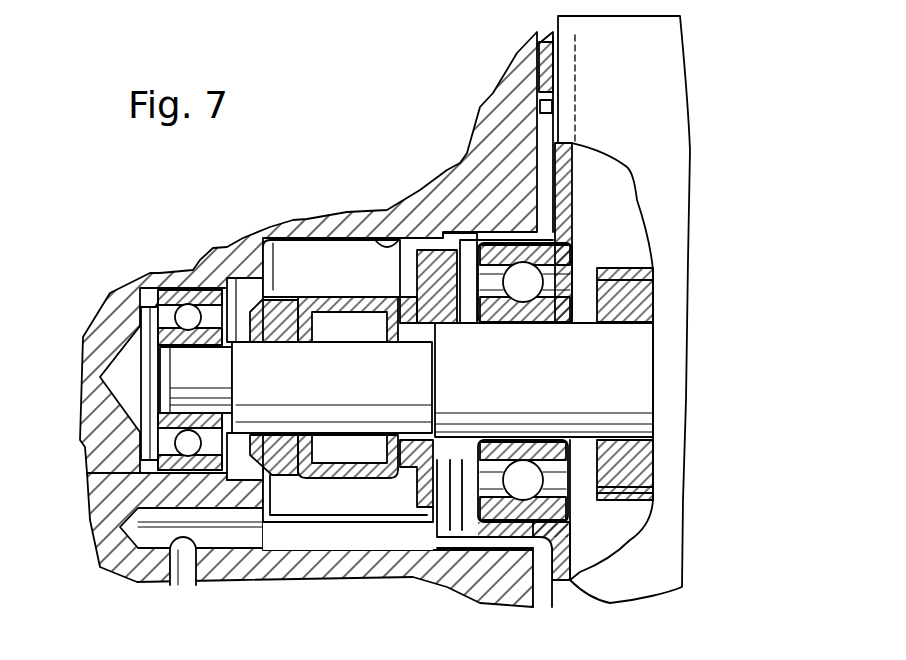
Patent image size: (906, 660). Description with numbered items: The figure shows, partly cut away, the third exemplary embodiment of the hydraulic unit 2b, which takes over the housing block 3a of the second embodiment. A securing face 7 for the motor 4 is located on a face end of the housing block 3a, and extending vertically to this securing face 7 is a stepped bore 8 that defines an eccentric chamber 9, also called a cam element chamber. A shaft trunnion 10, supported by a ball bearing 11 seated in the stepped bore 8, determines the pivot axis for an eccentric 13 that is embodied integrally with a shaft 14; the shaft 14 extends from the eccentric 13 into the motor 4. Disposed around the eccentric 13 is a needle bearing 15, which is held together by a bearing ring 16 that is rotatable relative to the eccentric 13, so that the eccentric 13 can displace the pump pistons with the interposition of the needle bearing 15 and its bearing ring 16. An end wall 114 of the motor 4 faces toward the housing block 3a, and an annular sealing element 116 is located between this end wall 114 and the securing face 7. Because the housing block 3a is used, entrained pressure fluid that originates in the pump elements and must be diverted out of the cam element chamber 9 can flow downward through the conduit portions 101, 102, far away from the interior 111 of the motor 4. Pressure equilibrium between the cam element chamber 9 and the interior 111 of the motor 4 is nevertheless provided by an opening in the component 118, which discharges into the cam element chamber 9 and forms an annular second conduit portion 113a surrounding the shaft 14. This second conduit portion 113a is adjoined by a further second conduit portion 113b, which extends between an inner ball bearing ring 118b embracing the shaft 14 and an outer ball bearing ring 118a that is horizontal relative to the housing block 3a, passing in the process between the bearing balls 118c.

The hydraulic unit 2b is at (625, 305).
The housing block 3a is at (110, 320).
The motor 4 is at (673, 110).
The securing face 7 is at (540, 106).
The stepped bore 8 is at (375, 240).
The eccentric chamber 9 is at (338, 262).
The shaft trunnion 10 is at (212, 381).
The ball bearing 11 is at (87, 475).
The eccentric 13 is at (368, 390).
The shaft 14 is at (548, 391).
The needle bearing 15 is at (353, 455).
The bearing ring 16 is at (320, 472).
The first conduit portion 101 is at (150, 540).
The first conduit portion 102 is at (187, 573).
The interior of the motor 111 is at (630, 242).
The second conduit portion 113a is at (437, 507).
The further second conduit portion 113b is at (553, 528).
The end wall of the motor 114 is at (578, 176).
The sealing element 116 is at (542, 45).
The component 118 is at (607, 540).
The outer ball bearing ring 118a is at (553, 508).
The inner ball bearing ring 118b is at (553, 452).
The bearing balls 118c is at (553, 482).